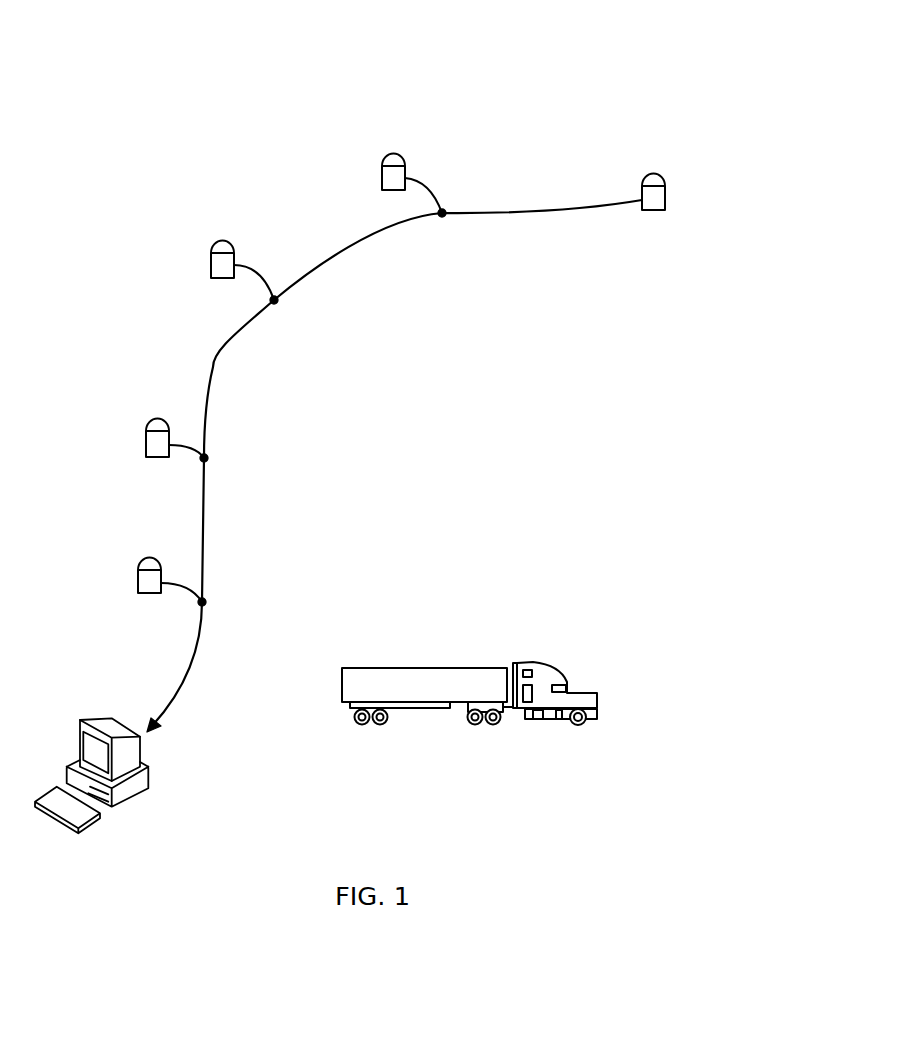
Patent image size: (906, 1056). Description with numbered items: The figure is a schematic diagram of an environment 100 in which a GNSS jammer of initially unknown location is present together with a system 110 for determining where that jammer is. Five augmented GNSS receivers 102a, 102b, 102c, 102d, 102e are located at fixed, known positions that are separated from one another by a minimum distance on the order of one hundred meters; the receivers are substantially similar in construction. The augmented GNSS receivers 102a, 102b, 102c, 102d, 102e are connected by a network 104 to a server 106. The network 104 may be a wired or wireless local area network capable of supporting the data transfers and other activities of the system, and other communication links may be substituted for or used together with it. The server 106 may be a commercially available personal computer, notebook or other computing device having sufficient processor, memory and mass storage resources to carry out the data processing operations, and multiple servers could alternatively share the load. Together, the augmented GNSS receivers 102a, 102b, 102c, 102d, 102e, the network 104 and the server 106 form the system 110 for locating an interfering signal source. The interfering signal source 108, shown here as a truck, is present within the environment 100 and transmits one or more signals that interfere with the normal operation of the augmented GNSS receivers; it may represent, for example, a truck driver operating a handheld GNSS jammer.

The environment 100 is at (755, 45).
The system 110 is at (207, 158).
The augmented GNSS receiver 102a is at (149, 557).
The augmented GNSS receiver 102b is at (157, 418).
The augmented GNSS receiver 102c is at (222, 240).
The augmented GNSS receiver 102d is at (392, 153).
The augmented GNSS receiver 102e is at (653, 173).
The network 104 is at (363, 235).
The server 106 is at (137, 798).
The interfering signal source 108 is at (470, 737).